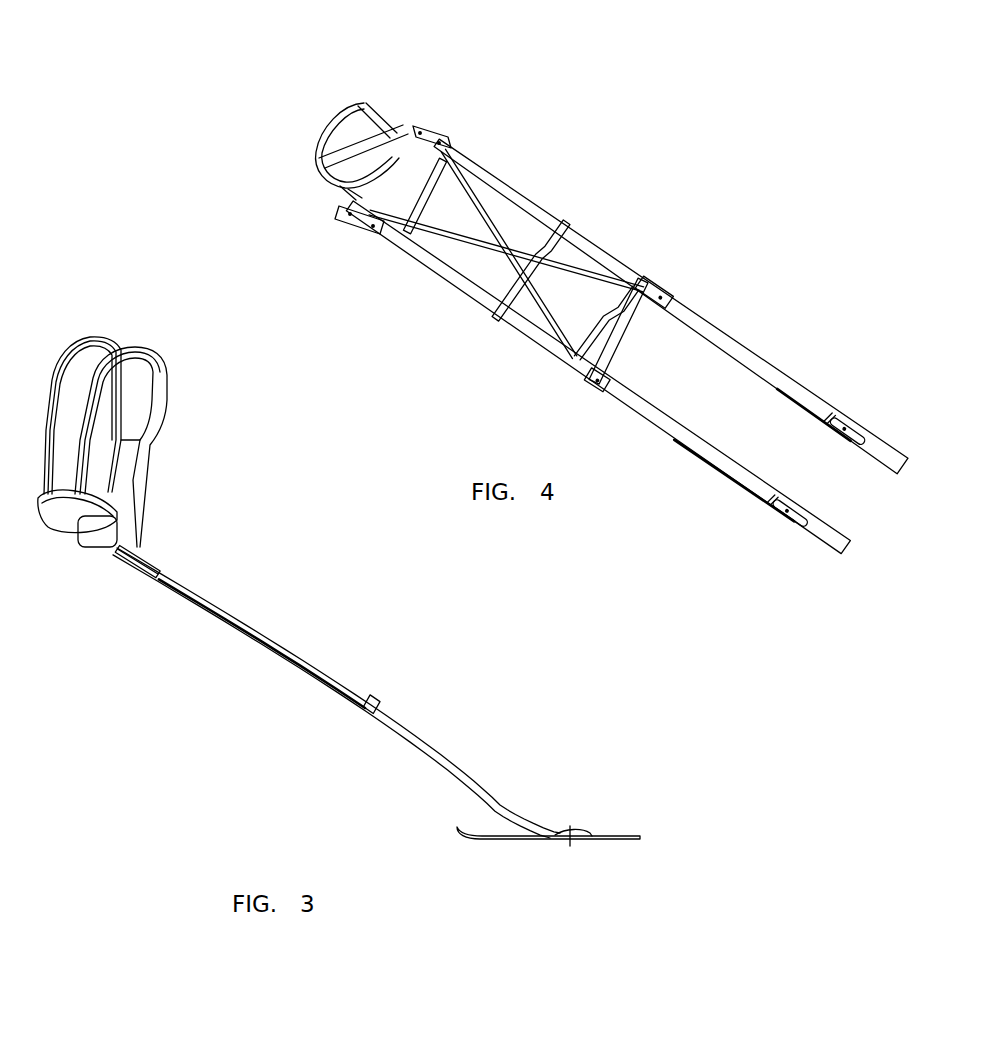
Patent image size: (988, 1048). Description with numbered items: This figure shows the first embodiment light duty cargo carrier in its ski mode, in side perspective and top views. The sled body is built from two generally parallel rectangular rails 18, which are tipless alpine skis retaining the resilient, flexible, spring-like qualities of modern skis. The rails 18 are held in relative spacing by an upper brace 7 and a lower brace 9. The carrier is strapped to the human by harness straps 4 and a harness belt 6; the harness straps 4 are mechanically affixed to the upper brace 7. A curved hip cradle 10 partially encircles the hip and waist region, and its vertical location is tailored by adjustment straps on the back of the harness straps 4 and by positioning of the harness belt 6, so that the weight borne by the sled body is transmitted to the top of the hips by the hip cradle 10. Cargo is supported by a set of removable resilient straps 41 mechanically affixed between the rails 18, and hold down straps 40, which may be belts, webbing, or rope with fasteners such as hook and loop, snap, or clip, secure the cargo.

In FIG. 4, the harness straps 4 is at (362, 105).
In FIG. 3, the harness straps 4 is at (150, 344).
In FIG. 3, the harness belt 6 is at (53, 521).
In FIG. 4, the upper brace 7 is at (418, 118).
In FIG. 3, the upper brace 7 is at (140, 559).
In FIG. 4, the lower brace 9 is at (603, 381).
In FIG. 3, the lower brace 9 is at (380, 703).
In FIG. 3, the hip cradle 10 is at (94, 539).
In FIG. 4, the rails 18 is at (607, 253).
In FIG. 3, the rails 18 is at (257, 627).
In FIG. 4, the hold down straps 40 is at (552, 242).
In FIG. 4, the removable resilient straps 41 is at (470, 252).
In FIG. 3, the removable resilient straps 41 is at (278, 654).